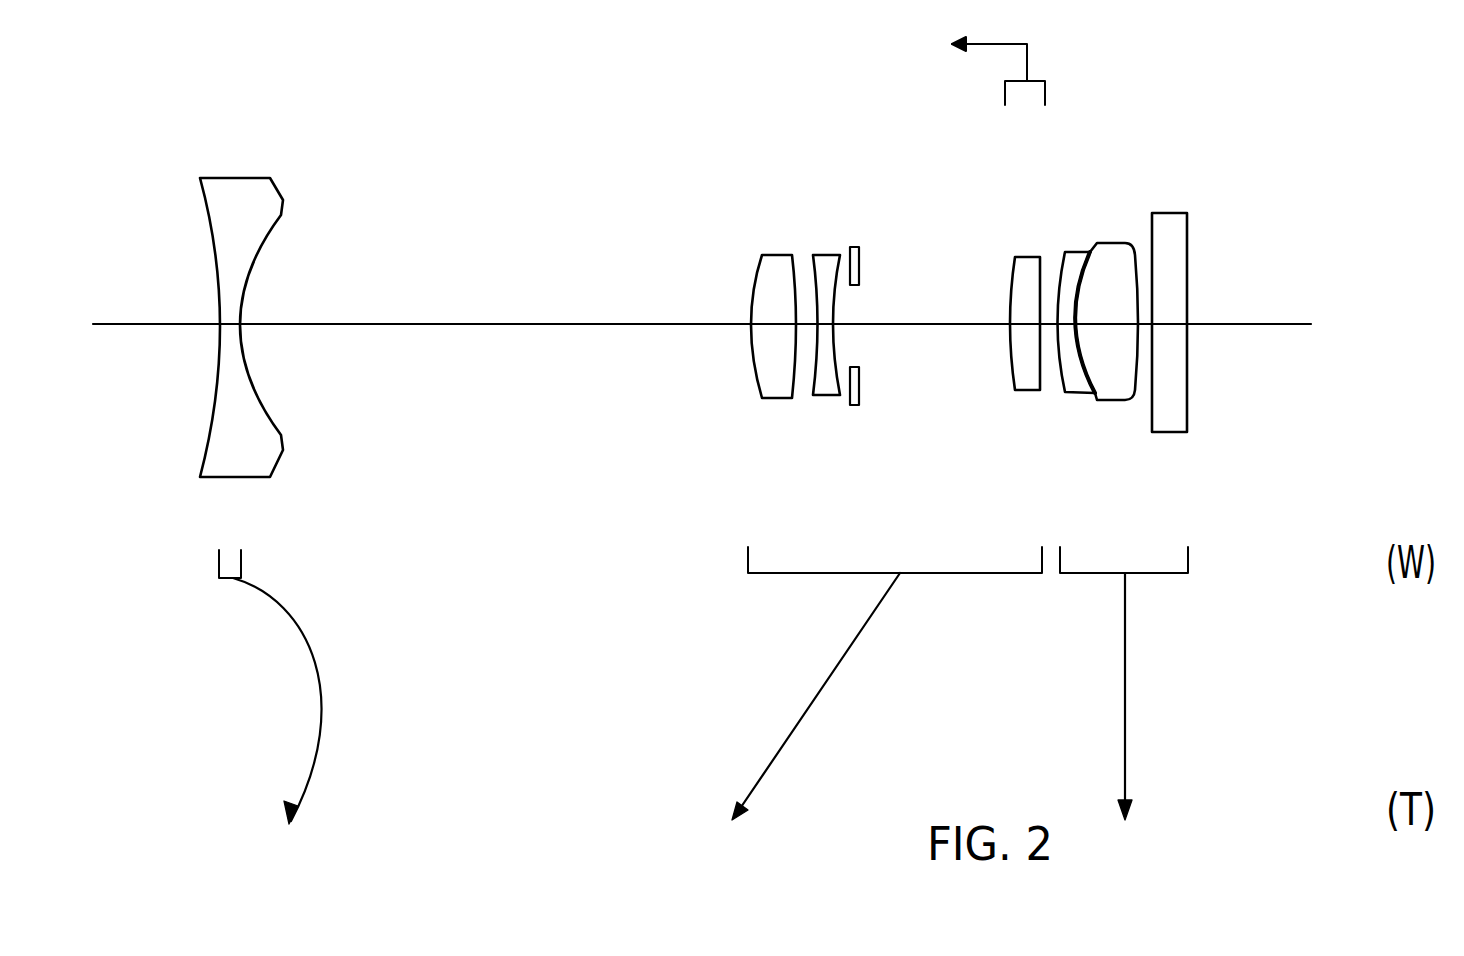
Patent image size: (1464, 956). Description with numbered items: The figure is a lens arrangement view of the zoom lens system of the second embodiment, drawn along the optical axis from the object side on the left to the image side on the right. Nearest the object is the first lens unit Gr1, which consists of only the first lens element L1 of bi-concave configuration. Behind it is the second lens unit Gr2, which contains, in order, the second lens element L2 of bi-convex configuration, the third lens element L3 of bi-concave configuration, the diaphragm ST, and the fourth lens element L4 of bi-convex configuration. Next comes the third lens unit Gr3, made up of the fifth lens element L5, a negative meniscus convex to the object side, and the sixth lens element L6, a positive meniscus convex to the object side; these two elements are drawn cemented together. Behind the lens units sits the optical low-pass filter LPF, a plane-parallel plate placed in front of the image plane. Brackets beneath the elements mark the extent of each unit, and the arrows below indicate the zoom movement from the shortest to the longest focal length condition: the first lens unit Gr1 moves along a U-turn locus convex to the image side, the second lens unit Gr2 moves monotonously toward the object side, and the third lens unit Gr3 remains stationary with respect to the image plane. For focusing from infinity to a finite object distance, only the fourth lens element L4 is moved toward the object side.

The first lens element L1 is at (220, 187).
The second lens element L2 is at (765, 270).
The third lens element L3 is at (822, 267).
The diaphragm ST is at (855, 245).
The fourth lens element L4 is at (1027, 270).
The fifth lens element L5 is at (1072, 268).
The sixth lens element L6 is at (1107, 257).
The optical low-pass filter LPF is at (1178, 228).
The first lens unit Gr1 is at (241, 687).
The second lens unit Gr2 is at (887, 683).
The third lens unit Gr3 is at (1131, 683).